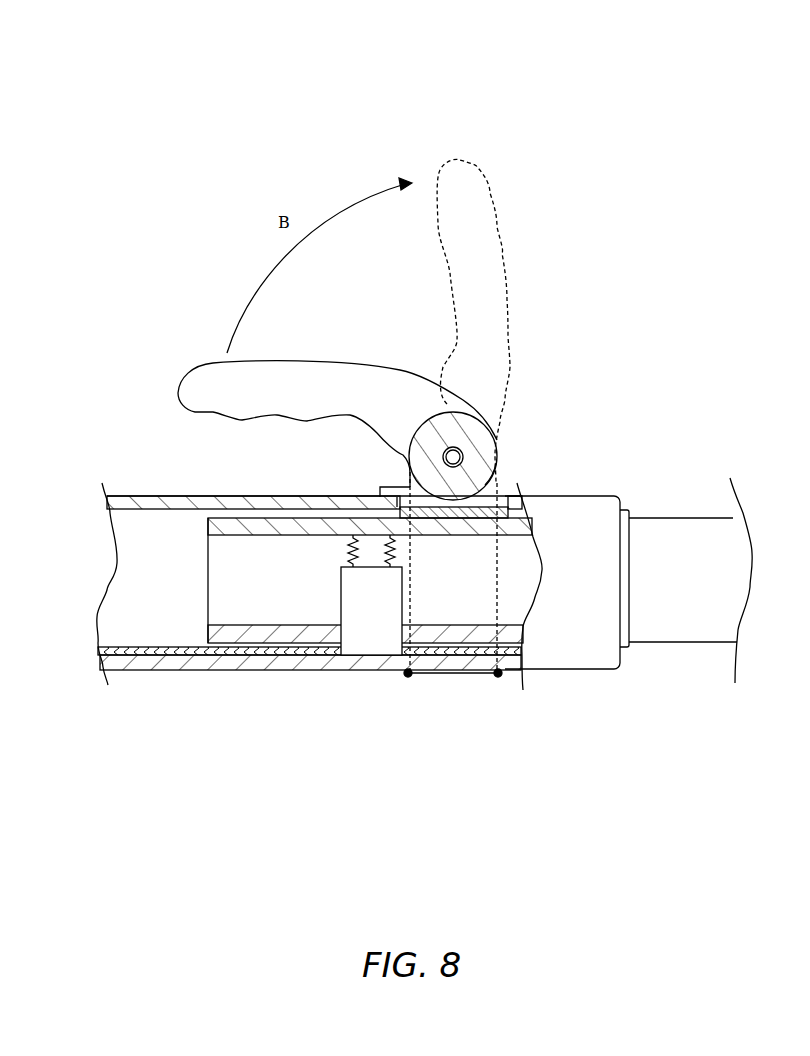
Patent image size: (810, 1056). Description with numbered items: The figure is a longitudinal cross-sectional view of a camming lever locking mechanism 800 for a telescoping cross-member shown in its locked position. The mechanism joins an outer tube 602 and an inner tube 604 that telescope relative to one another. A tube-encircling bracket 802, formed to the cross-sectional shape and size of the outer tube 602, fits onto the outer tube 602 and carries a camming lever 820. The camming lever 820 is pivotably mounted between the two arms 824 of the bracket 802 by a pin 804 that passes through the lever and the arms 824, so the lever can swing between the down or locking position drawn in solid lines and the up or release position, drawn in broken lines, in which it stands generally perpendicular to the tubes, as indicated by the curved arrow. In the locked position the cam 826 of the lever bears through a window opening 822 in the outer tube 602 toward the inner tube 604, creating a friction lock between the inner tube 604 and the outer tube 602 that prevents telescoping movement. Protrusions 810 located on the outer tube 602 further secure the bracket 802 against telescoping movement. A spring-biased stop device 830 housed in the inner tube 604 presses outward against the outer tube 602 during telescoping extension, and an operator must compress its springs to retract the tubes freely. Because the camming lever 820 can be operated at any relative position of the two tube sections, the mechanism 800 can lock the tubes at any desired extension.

The camming lever locking mechanism 800 is at (611, 129).
The outer tube 602 is at (118, 532).
The inner tube 604 is at (232, 610).
The tube-encircling bracket 802 is at (460, 662).
The pin 804 is at (468, 455).
The protrusions 810 is at (405, 675).
The camming lever 820 is at (278, 387).
The window opening 822 is at (398, 487).
The arms 824 is at (483, 408).
The cam 826 is at (475, 472).
The stop device 830 is at (377, 637).